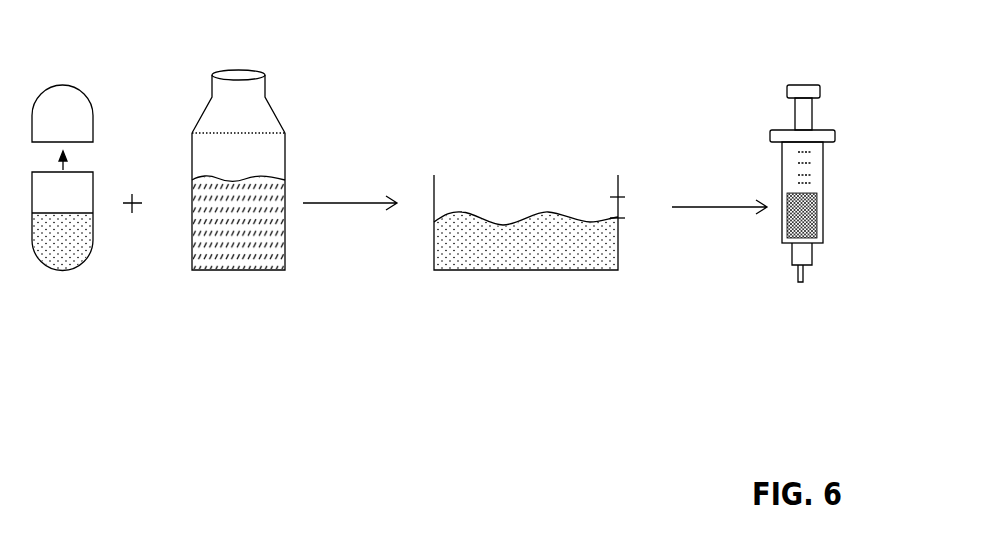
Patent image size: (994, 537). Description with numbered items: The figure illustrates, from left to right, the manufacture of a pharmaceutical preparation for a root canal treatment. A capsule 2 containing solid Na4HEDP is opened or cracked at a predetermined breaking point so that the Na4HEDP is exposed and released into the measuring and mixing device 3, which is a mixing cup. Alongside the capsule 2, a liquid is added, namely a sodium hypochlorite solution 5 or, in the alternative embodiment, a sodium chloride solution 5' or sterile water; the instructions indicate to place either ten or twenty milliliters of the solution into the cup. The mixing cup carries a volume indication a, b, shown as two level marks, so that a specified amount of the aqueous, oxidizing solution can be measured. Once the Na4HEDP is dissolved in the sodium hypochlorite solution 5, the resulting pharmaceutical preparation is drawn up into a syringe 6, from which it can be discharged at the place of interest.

The capsule 2 is at (63, 238).
The sodium hypochlorite solution 5 is at (269, 155).
The sodium chloride solution 5' is at (269, 155).
The measuring and mixing device 3 is at (539, 260).
The volume indication a is at (627, 219).
The volume indication b is at (627, 197).
The syringe 6 is at (792, 244).